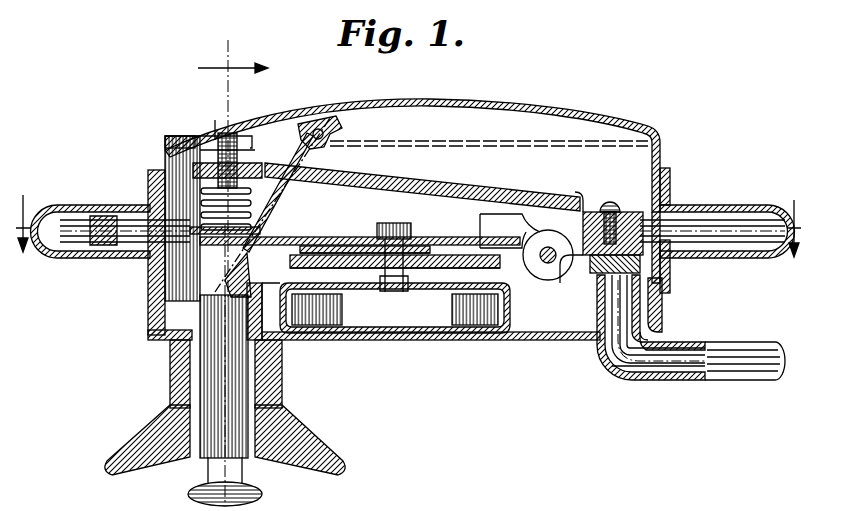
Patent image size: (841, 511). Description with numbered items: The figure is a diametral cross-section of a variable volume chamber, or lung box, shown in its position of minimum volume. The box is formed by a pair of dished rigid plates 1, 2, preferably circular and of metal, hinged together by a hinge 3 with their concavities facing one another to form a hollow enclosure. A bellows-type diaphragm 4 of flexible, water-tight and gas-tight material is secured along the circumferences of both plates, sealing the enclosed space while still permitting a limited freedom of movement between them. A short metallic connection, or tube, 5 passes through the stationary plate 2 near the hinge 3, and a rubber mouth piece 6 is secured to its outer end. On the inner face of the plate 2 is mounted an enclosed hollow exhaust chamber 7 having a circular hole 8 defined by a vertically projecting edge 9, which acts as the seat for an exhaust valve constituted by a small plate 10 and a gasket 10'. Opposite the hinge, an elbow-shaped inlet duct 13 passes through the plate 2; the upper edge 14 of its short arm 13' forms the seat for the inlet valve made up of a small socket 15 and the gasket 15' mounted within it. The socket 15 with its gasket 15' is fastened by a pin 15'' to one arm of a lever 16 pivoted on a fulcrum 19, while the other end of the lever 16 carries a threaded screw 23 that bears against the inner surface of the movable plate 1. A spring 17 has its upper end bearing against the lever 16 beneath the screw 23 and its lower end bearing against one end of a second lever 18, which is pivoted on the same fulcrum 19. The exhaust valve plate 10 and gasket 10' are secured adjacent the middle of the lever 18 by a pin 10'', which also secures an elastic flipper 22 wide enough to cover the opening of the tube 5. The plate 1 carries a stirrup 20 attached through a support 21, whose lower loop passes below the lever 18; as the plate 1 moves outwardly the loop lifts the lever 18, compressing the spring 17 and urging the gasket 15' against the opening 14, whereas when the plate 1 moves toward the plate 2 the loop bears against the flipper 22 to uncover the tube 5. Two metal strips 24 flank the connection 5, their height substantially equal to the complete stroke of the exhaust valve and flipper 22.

The plate 1 is at (495, 104).
The plate 2 is at (418, 340).
The hinge 3 is at (101, 215).
The diaphragm 4 is at (708, 180).
The connection 5 is at (200, 373).
The mouth piece 6 is at (135, 447).
The exhaust chamber 7 is at (345, 336).
The hole 8 is at (443, 286).
The projecting edge 9 is at (293, 278).
The small plate 10 is at (379, 264).
The gasket 10' is at (475, 306).
The pin 10'' is at (337, 306).
The inlet duct 13 is at (745, 383).
The short arm 13' is at (677, 309).
The upper edge 14 is at (590, 285).
The socket 15 is at (651, 246).
The gasket 15' is at (639, 248).
The pin 15'' is at (613, 200).
The lever 16 is at (481, 184).
The spring 17 is at (200, 190).
The lever 18 is at (315, 237).
The fulcrum 19 is at (551, 258).
The stirrup 20 is at (290, 153).
The support 21 is at (317, 112).
The flipper 22 is at (222, 293).
The threaded screw 23 is at (214, 132).
The metal strips 24 is at (210, 262).